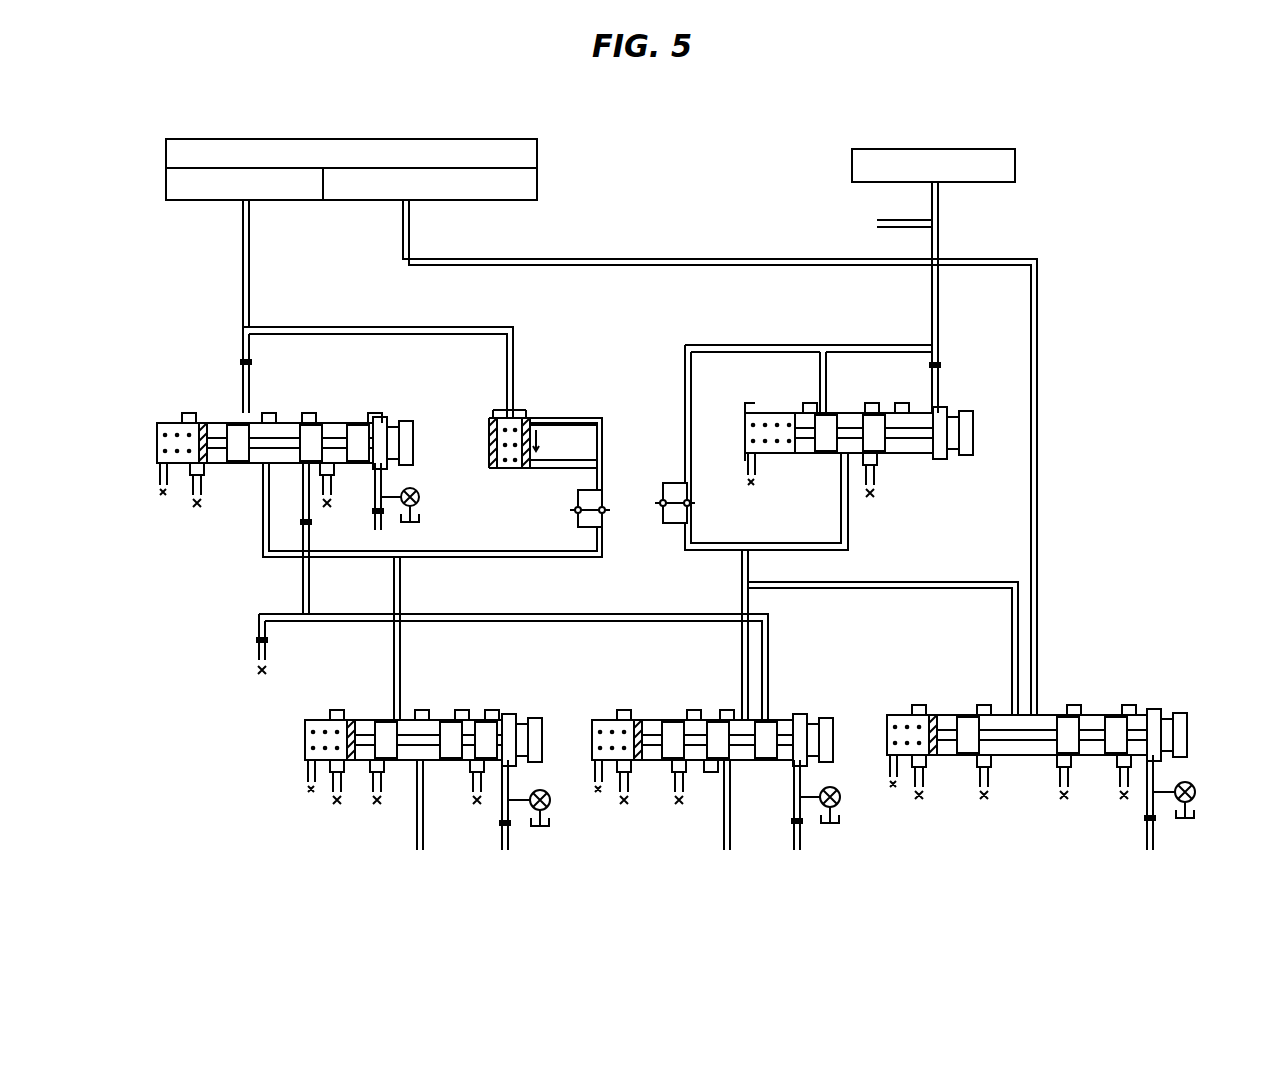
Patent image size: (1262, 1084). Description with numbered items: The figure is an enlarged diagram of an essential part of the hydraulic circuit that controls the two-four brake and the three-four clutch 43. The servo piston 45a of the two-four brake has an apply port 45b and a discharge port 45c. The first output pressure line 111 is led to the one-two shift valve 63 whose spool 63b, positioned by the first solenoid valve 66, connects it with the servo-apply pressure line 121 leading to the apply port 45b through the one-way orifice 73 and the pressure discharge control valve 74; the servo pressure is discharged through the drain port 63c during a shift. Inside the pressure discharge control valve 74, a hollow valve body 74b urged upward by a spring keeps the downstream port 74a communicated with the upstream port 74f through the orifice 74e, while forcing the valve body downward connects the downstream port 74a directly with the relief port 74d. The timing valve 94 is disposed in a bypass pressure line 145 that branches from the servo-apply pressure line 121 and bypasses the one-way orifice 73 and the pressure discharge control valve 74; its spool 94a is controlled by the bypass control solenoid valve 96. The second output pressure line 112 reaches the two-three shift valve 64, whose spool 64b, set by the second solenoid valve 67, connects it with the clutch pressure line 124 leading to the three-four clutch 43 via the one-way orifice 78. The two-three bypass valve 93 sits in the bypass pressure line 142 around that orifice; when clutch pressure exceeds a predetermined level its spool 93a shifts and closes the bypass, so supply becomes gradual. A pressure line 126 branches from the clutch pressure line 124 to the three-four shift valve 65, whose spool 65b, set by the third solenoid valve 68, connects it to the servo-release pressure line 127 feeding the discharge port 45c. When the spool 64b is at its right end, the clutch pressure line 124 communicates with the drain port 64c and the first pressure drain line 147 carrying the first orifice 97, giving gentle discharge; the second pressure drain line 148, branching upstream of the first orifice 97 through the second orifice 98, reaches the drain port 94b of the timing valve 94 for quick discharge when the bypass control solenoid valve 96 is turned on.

The 3-4 clutch 43 is at (1016, 166).
The servo piston 45a is at (483, 138).
The apply port 45b is at (207, 203).
The discharge port 45c is at (474, 200).
The 1-2 shift valve 63 is at (446, 737).
The spool of 1-2 shift valve 63b is at (450, 740).
The drain port of 1-2 shift valve 63c is at (375, 776).
The 2-3 shift valve 64 is at (738, 721).
The spool of 2-3 shift valve 64b is at (667, 740).
The drain port of 2-3 shift valve 64c is at (766, 712).
The 3-4 shift valve 65 is at (1062, 700).
The spool of 3-4 shift valve 65b is at (1116, 727).
The first solenoid valve 66 is at (549, 810).
The second solenoid valve 67 is at (840, 799).
The third solenoid valve 68 is at (1194, 785).
The one-way orifice 73 is at (605, 500).
The pressure discharge control valve 74 is at (525, 414).
The downstream port 74a is at (504, 411).
The valve body 74b is at (490, 456).
The relief port 74d is at (537, 421).
The orifice 74e is at (487, 430).
The upstream port 74f is at (531, 464).
The one-way orifice 78 is at (672, 526).
The 2-3 bypass valve 93 is at (881, 398).
The spool of 2-3 bypass valve 93a is at (940, 456).
The timing valve 94 is at (281, 427).
The spool of timing valve 94a is at (323, 428).
The drain port of timing valve 94b is at (326, 482).
The bypass control solenoid valve 96 is at (419, 500).
The first orifice 97 is at (258, 643).
The second orifice 98 is at (309, 523).
The first output pressure line 111 is at (424, 829).
The second output pressure line 112 is at (725, 816).
The servo-apply pressure line 121 is at (318, 327).
The 3-4 clutch pressure line 124 is at (945, 238).
The pressure line 126 is at (930, 588).
The servo-release pressure line 127 is at (655, 259).
The bypass pressure line 142 is at (822, 371).
The bypass pressure line 145 is at (250, 393).
The first pressure drain line 147 is at (512, 614).
The second pressure drain line 148 is at (303, 582).